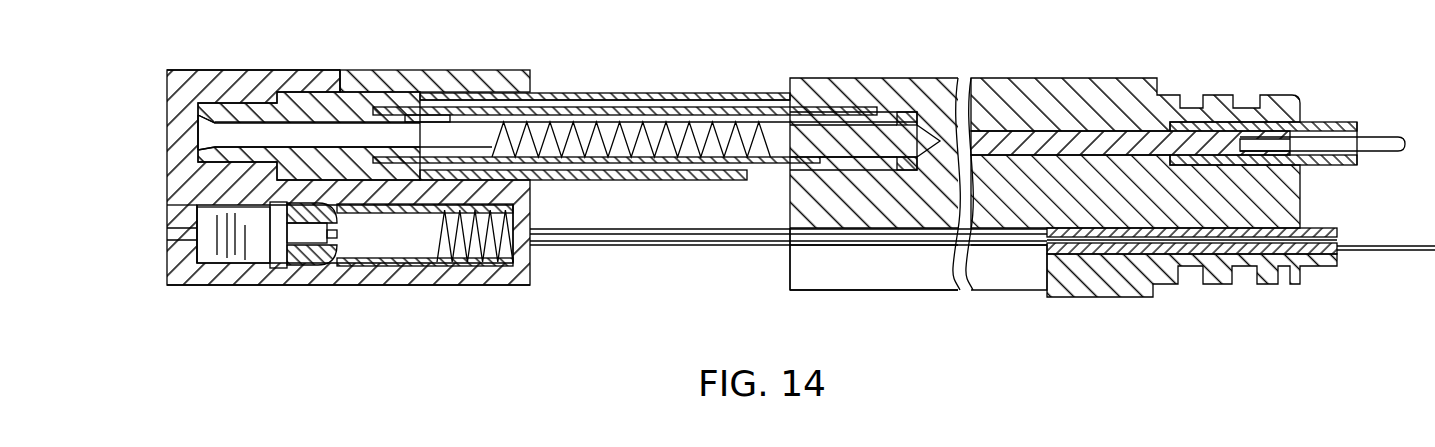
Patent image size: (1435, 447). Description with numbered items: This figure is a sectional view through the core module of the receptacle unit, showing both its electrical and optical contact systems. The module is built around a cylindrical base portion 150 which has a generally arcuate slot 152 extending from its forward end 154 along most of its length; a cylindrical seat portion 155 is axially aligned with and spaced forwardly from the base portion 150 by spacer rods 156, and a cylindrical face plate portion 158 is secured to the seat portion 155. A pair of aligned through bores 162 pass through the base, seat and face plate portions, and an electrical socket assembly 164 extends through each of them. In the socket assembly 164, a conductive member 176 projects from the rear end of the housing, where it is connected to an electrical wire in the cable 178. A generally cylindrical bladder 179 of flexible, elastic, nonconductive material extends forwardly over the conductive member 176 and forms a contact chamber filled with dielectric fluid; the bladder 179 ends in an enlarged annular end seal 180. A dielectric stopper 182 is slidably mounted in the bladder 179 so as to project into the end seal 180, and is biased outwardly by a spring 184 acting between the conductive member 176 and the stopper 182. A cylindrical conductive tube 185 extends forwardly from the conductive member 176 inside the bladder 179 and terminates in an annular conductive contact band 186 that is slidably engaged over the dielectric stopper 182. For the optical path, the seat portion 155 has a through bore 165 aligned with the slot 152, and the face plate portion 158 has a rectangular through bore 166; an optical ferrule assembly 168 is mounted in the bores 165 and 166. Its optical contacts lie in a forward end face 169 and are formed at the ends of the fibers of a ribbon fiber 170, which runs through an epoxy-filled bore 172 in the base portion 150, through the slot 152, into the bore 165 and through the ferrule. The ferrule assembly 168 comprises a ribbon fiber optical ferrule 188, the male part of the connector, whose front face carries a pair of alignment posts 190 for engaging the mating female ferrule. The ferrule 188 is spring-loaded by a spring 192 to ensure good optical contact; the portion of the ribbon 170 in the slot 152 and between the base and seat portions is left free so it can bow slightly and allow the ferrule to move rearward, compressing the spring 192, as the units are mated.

The cylindrical base portion 150 is at (933, 83).
The arcuate slot 152 is at (983, 280).
The forward end 154 is at (787, 268).
The cylindrical seat portion 155 is at (402, 70).
The spacer rods 156 is at (707, 230).
The cylindrical face plate portion 158 is at (262, 72).
The through bores 162 is at (177, 143).
The electrical socket assembly 164 is at (545, 76).
The through bore 165 is at (367, 280).
The rectangular through bore 166 is at (193, 270).
The optical ferrule assembly 168 is at (447, 305).
The forward end face 169 is at (195, 240).
The ribbon fiber 170 is at (847, 247).
The epoxy-filled bore 172 is at (1178, 262).
The conductive member 176 is at (1100, 133).
The cable 178 is at (1385, 133).
The bladder 179 is at (620, 97).
The end seal 180 is at (227, 110).
The dielectric stopper 182 is at (227, 137).
The spring 184 is at (643, 123).
The conductive tube 185 is at (710, 117).
The conductive contact band 186 is at (417, 118).
The optical ferrule 188 is at (237, 263).
The alignment posts 190 is at (170, 231).
The spring 192 is at (512, 282).